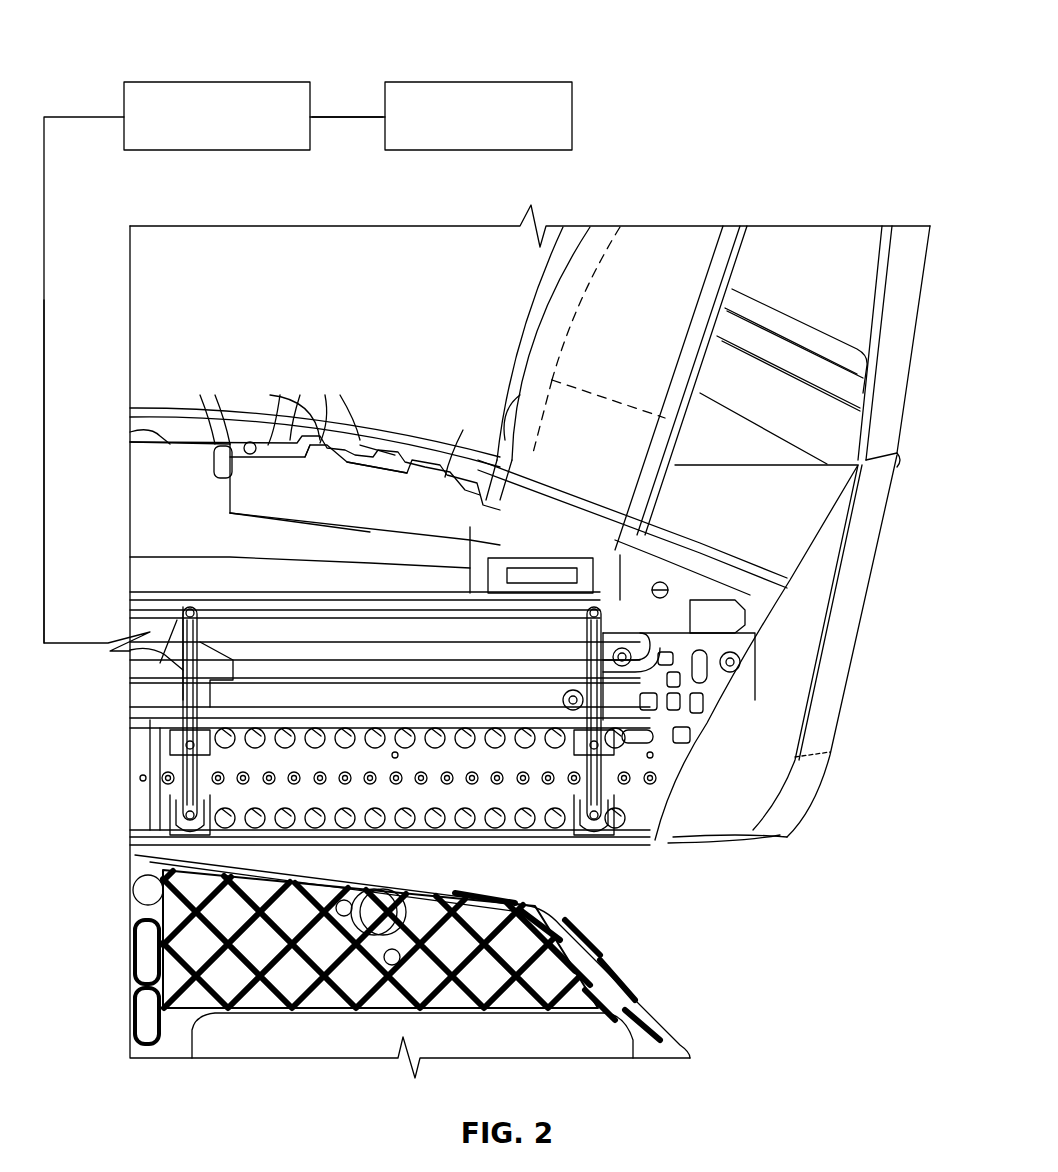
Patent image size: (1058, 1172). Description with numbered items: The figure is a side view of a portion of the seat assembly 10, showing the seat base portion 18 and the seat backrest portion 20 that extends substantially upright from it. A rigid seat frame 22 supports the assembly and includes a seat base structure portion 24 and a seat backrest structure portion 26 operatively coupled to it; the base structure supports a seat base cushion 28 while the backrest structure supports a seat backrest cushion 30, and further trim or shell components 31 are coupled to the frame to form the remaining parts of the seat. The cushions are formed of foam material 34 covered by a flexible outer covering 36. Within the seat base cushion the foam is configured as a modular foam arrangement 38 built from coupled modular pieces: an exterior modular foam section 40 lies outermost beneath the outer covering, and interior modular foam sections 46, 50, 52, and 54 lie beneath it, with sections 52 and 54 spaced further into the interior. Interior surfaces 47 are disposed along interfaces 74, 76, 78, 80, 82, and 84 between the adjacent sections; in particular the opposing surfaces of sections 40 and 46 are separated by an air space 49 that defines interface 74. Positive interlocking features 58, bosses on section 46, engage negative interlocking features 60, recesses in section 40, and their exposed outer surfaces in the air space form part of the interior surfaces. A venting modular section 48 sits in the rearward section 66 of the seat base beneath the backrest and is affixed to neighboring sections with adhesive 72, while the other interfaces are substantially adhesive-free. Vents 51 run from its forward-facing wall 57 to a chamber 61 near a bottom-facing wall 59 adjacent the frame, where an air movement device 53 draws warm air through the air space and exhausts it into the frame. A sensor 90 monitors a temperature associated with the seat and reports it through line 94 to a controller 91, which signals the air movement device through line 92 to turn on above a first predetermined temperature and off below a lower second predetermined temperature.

The seat assembly 10 is at (893, 99).
The seat base portion 18 is at (165, 408).
The seat backrest portion 20 is at (690, 270).
The seat frame 22 is at (445, 790).
The seat base structure portion 24 is at (410, 839).
The seat backrest structure portion 26 is at (700, 372).
The seat base cushion 28 is at (215, 408).
The seat backrest cushion 30 is at (560, 255).
The trim and/or shell panels or components 31 is at (845, 625).
The foam material 34 is at (632, 275).
The outer covering 36 is at (543, 297).
The modular foam arrangement 38 is at (380, 455).
The exterior modular foam section 40 is at (140, 432).
The interior modular foam section 46 is at (337, 512).
The interior surfaces 47 is at (255, 443).
The venting modular section 48 is at (642, 490).
The air space 49 is at (377, 440).
The interior modular foam section 50 is at (150, 487).
The vents 51 is at (490, 540).
The interior modular foam section 52 is at (254, 552).
The air movement device 53 is at (600, 580).
The interior modular foam section 54 is at (187, 588).
The forward-facing wall 57 is at (472, 563).
The interlocking features 58 is at (307, 458).
The bottom-facing wall 59 is at (648, 800).
The interlocking features 60 is at (320, 443).
The chamber 61 is at (500, 560).
The rearward section 66 is at (642, 535).
The adhesive 72 is at (552, 545).
The interface 74 is at (463, 430).
The interface 76 is at (232, 522).
The interface 78 is at (170, 722).
The interface 80 is at (228, 478).
The interface 82 is at (150, 435).
The interface 84 is at (155, 562).
The sensor 90 is at (480, 82).
The controller 91 is at (220, 82).
The line 92 is at (80, 648).
The line 94 is at (347, 117).